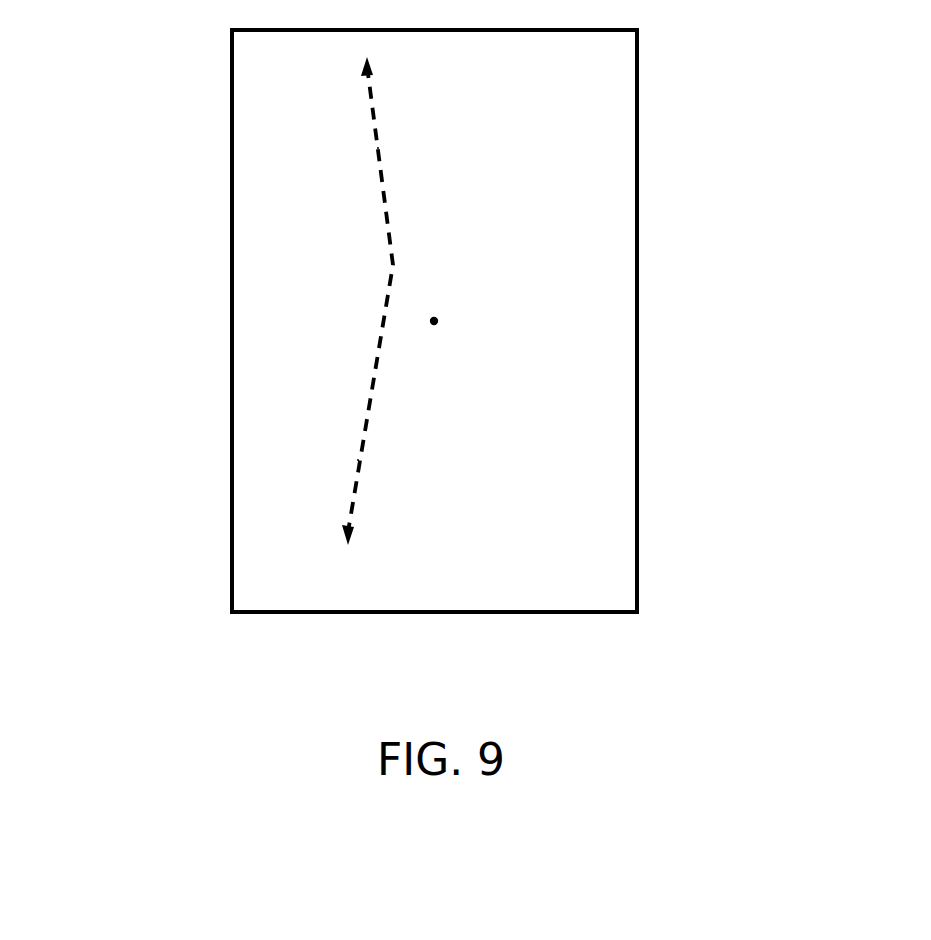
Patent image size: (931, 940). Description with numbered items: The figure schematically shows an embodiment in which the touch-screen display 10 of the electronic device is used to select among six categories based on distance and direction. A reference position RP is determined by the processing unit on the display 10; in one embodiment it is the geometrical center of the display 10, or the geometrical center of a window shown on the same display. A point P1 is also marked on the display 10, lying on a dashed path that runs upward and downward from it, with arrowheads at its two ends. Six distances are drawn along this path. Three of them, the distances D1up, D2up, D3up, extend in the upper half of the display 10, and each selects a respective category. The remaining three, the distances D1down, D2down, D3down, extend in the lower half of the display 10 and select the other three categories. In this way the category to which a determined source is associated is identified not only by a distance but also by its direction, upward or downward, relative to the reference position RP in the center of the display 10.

The touch-screen display 10 is at (610, 570).
The turning point of gaze path P1 is at (393, 265).
The reference position RP is at (434, 321).
The distance D3up is at (366, 68).
The distance D2up is at (378, 148).
The distance D1up is at (387, 220).
The distance D1down is at (372, 386).
The distance D2down is at (358, 460).
The distance D3down is at (348, 530).